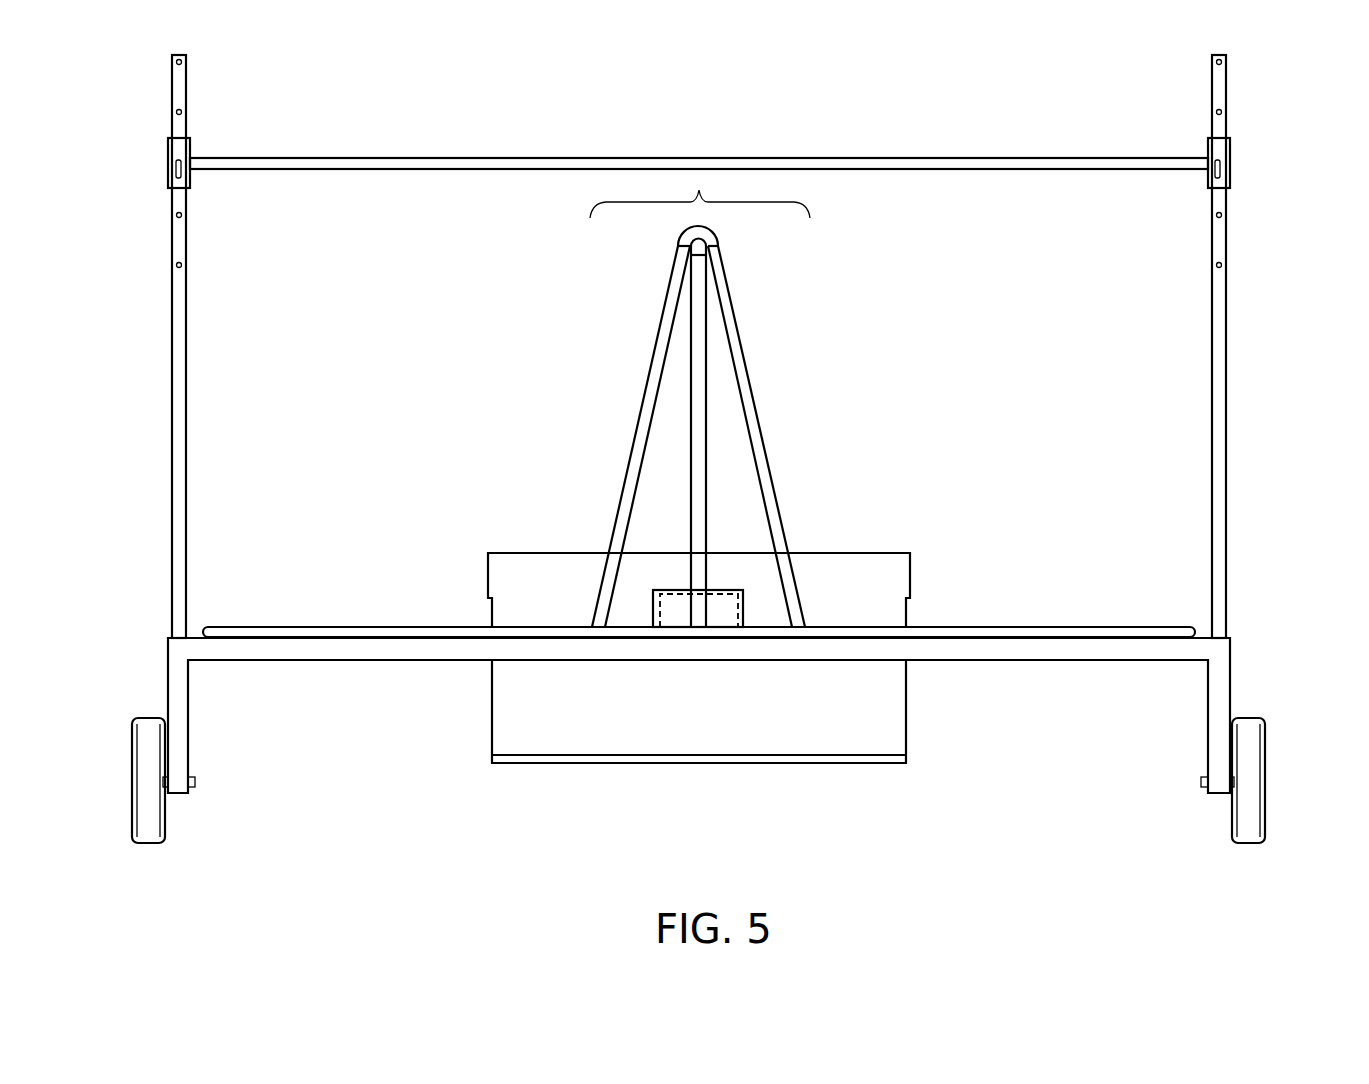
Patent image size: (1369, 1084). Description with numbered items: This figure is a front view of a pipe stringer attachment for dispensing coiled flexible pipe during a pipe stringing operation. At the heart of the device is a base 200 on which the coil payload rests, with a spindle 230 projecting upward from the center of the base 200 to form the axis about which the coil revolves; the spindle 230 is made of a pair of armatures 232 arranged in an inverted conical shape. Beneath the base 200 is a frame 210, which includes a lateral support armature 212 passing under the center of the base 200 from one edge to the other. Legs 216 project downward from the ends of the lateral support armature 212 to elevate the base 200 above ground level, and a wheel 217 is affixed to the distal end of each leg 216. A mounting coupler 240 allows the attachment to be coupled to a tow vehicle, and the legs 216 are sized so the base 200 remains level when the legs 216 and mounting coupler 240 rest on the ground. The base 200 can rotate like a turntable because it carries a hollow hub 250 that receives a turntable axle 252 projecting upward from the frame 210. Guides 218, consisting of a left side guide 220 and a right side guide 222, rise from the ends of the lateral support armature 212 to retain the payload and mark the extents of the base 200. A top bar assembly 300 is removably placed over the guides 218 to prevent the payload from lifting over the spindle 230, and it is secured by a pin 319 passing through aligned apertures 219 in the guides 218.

The base 200 is at (1135, 634).
The frame 210 is at (743, 726).
The lateral support armature 212 is at (392, 648).
The legs 216 is at (185, 731).
The wheel 217 is at (150, 813).
The guides 218 is at (697, 346).
The apertures 219 is at (178, 113).
The left side guide 220 is at (1226, 295).
The right side guide 222 is at (178, 287).
The spindle 230 is at (791, 356).
The armatures 232 is at (698, 333).
The mounting coupler 240 is at (540, 740).
The hub 250 is at (641, 479).
The turntable axle 252 is at (667, 588).
The top bar assembly 300 is at (927, 163).
The pin 319 is at (176, 168).